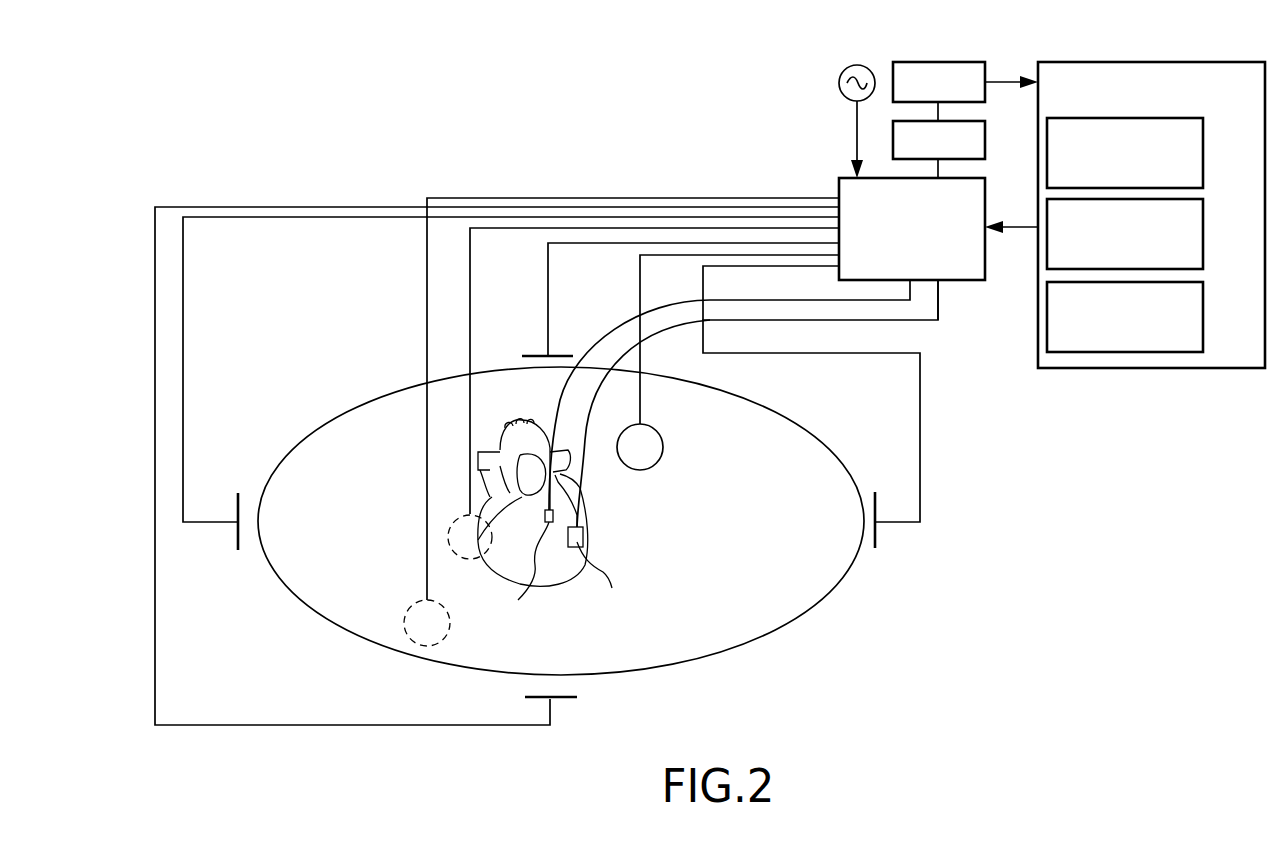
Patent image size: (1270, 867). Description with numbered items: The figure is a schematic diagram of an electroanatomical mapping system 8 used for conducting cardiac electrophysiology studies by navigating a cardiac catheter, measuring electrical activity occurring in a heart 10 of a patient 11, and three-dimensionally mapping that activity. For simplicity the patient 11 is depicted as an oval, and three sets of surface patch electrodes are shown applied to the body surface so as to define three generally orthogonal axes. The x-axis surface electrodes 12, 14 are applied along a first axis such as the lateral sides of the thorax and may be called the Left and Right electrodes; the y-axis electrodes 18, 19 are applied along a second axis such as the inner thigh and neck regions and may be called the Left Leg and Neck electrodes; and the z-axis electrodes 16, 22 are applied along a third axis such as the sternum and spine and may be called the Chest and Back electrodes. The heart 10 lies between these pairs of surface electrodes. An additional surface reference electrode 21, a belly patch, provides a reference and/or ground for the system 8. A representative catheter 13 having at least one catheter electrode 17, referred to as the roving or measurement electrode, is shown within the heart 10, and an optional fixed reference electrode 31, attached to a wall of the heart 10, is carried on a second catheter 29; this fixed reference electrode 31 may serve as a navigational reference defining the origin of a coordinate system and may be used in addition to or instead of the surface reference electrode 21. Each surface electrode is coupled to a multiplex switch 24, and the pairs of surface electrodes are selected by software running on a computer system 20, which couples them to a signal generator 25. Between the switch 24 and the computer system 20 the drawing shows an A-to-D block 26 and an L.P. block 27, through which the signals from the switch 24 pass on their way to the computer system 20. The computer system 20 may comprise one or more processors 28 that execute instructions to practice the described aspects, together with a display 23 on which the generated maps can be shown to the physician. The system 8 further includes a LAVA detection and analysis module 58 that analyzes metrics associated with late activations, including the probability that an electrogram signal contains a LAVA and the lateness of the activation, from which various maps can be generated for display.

The system 8 is at (243, 128).
The heart 10 is at (587, 533).
The patient 11 is at (780, 412).
The x-axis surface electrode 12 is at (538, 355).
The catheter 13 is at (940, 305).
The x-axis surface electrode 14 is at (550, 707).
The z-axis electrode 16 is at (643, 398).
The catheter electrode 17 is at (757, 452).
The y-axis electrode 18 is at (237, 543).
The y-axis electrode 19 is at (876, 536).
The computer system 20 is at (1248, 346).
The surface reference electrode 21 is at (426, 533).
The z-axis electrode 22 is at (470, 282).
The display 23 is at (1139, 263).
The multiplex switch 24 is at (899, 251).
The signal generator 25 is at (840, 70).
The analog to digital converter 26 is at (957, 20).
The low pass filter 27 is at (1000, 160).
The processor 28 is at (1114, 180).
The second catheter 29 is at (567, 386).
The fixed reference electrode 31 is at (528, 567).
The LAVA detection and analysis module 58 is at (1139, 345).